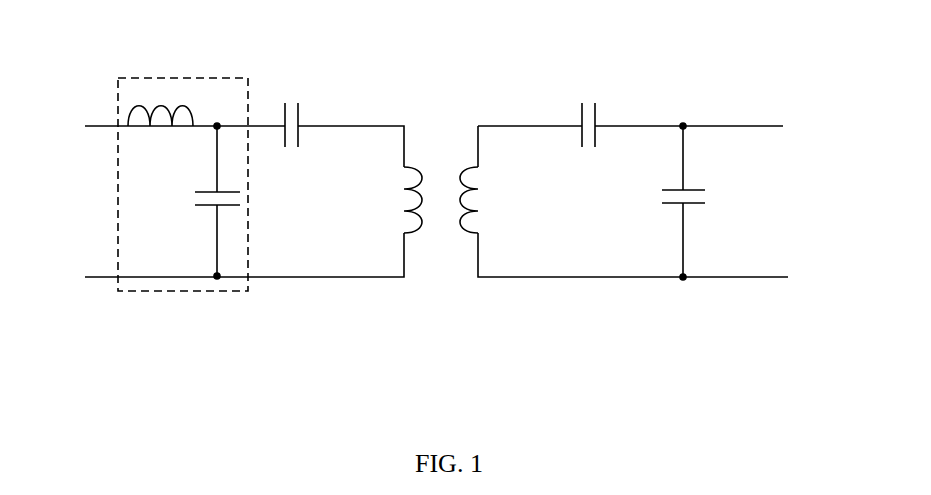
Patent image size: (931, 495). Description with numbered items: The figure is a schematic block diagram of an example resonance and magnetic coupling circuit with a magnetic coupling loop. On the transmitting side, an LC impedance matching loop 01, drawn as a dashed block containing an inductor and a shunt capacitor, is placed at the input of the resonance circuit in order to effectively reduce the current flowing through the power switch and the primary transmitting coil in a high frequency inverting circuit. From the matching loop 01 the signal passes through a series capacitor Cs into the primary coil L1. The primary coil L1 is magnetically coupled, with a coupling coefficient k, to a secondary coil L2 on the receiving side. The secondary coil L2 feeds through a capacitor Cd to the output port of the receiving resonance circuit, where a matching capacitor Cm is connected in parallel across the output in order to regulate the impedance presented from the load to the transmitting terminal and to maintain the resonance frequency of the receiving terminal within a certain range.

The LC impedance matching loop 01 is at (203, 74).
The series capacitor Cs is at (294, 108).
The primary coil L1 is at (385, 200).
The coupling coefficient k is at (442, 92).
The secondary series capacitor Cd is at (585, 108).
The secondary coil L2 is at (490, 200).
The matching capacitor Cm is at (702, 201).